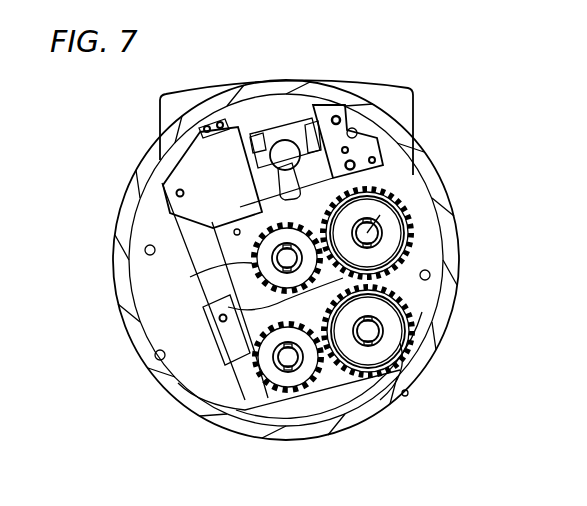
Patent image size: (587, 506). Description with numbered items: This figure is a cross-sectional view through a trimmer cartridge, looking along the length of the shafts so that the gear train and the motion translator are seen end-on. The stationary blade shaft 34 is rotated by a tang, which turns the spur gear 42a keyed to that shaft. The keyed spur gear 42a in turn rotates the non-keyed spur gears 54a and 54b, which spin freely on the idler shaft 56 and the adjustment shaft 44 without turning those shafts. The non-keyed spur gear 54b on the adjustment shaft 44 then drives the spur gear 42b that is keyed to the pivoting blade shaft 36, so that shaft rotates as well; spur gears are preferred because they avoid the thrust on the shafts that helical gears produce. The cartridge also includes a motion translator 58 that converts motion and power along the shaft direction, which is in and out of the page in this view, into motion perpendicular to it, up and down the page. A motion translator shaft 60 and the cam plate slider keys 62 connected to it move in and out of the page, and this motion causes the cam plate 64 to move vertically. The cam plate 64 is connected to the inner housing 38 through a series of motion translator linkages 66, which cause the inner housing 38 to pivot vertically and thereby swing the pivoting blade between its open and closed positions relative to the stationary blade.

The motion translator 58 is at (157, 164).
The inner housing 38 is at (178, 383).
The cam plate 64 is at (232, 174).
The motion translator shaft 60 is at (280, 178).
The cam plate slider keys 62 is at (306, 138).
The idler shaft 56 is at (390, 196).
The stationary blade shaft 34 is at (283, 258).
The pivoting blade shaft 36 is at (290, 362).
The non-keyed spur gear 54a is at (398, 237).
The non-keyed spur gear 54b is at (380, 332).
The spur gear 42a is at (205, 286).
The spur gear 42b is at (222, 382).
The motion translator linkages 66 is at (217, 337).
The adjustment shaft 44 is at (400, 345).